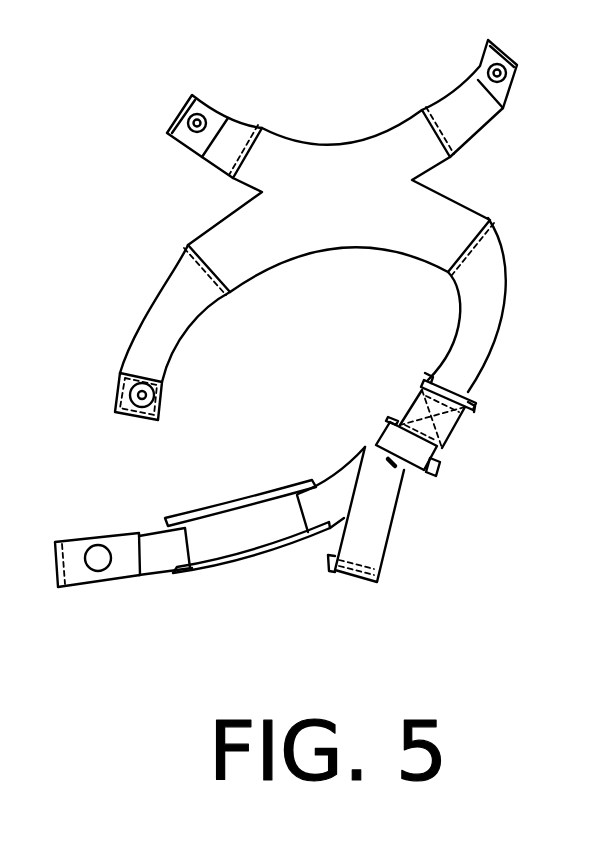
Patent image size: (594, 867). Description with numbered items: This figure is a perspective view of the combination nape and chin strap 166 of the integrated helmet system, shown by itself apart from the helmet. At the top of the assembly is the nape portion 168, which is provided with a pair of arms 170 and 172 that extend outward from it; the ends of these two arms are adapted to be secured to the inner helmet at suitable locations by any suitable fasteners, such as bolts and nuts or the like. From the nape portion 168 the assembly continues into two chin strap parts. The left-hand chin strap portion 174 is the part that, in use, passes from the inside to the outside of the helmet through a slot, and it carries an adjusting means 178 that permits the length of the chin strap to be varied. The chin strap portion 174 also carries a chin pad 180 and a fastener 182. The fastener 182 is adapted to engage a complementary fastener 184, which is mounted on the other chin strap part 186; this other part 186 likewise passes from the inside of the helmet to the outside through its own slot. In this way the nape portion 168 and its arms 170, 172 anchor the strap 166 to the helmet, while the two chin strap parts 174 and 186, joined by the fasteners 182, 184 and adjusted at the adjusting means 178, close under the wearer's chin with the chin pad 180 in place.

The combination nape and chin strap 166 is at (311, 313).
The nape portion 168 is at (325, 165).
The arm 170 is at (237, 137).
The arm 172 is at (453, 103).
The left-hand chin strap portion 174 is at (490, 308).
The adjusting means 178 is at (440, 462).
The chin pad 180 is at (250, 484).
The fastener 182 is at (100, 548).
The complementary fastener 184 is at (142, 395).
The chin strap part 186 is at (170, 345).